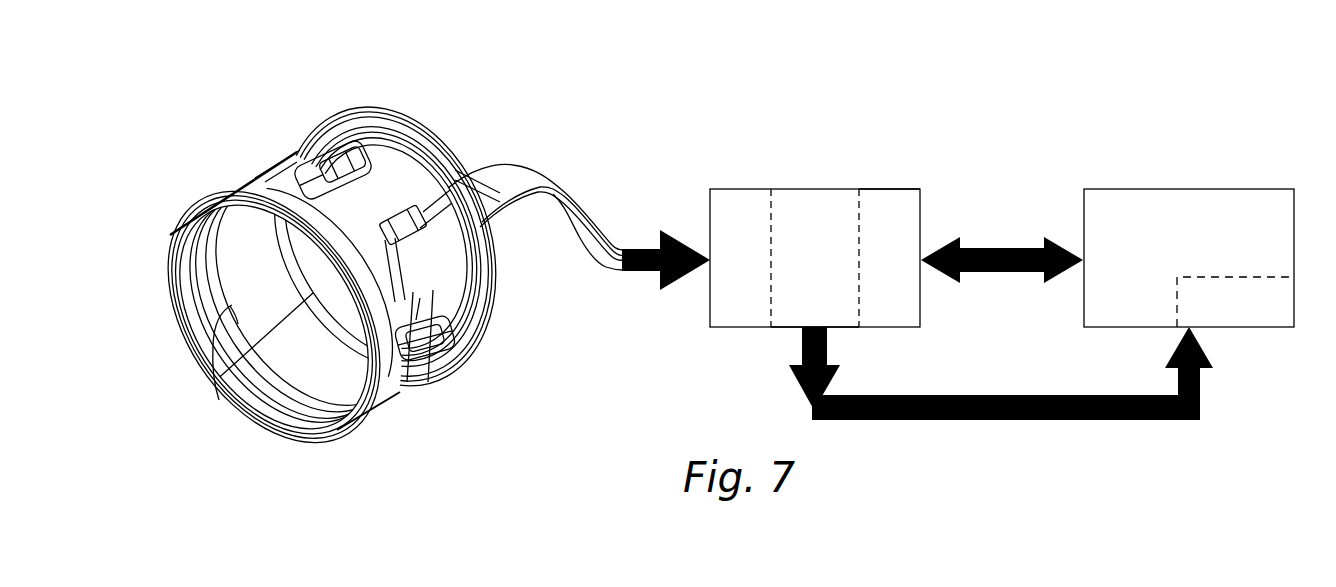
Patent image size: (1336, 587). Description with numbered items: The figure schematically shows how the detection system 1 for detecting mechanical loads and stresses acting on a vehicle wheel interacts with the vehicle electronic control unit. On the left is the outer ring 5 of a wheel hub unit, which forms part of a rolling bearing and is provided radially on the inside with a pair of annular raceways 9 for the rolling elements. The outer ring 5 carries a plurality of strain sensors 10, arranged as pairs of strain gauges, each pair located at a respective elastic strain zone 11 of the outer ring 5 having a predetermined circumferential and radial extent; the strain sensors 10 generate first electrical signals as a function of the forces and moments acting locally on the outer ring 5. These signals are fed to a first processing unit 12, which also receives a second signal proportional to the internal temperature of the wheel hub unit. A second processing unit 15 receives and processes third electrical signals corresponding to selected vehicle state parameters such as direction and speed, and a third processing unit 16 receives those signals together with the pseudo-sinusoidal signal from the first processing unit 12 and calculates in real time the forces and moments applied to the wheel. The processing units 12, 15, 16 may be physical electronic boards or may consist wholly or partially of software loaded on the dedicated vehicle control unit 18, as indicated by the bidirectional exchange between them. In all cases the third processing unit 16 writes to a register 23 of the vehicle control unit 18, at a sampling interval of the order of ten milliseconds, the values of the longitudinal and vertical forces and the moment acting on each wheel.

The detection system 1 is at (710, 383).
The outer ring 5 is at (262, 141).
The annular raceways 9 is at (213, 378).
The strain sensors 10 is at (357, 148).
The elastic strain zone 11 is at (418, 150).
The first processing unit 12 is at (738, 206).
The second processing unit 15 is at (886, 206).
The third processing unit 16 is at (800, 296).
The vehicle control unit 18 is at (1182, 205).
The register 23 is at (1257, 306).